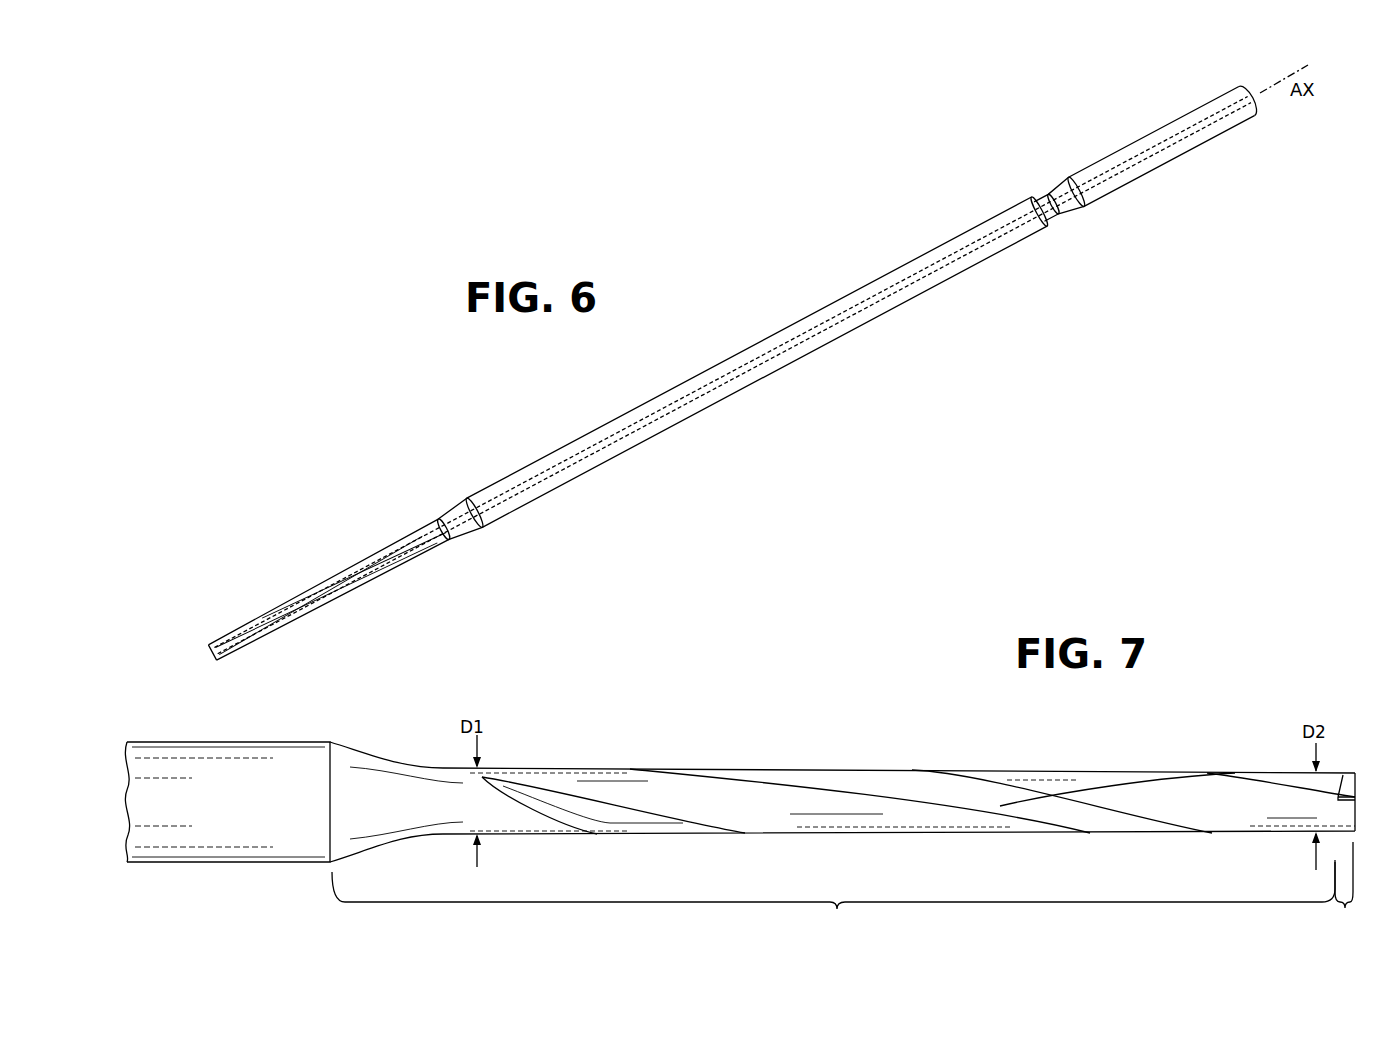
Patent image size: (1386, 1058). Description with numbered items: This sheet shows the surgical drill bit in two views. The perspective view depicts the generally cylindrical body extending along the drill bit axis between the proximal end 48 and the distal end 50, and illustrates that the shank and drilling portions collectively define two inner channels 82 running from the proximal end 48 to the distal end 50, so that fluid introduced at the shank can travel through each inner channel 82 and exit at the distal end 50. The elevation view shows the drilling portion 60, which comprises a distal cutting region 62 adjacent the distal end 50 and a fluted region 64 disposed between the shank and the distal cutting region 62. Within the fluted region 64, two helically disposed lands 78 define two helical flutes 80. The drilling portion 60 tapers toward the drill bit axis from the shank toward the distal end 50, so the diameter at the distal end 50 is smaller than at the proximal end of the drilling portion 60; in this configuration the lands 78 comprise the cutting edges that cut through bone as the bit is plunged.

In FIG. 6, the proximal end 48 is at (1256, 84).
In FIG. 6, the distal end 50 is at (206, 655).
In FIG. 7, the distal end 50 is at (1357, 800).
In FIG. 6, the inner channel 82 is at (895, 272).
In FIG. 7, the drilling portion 60 is at (1358, 765).
In FIG. 7, the fluted region 64 is at (833, 899).
In FIG. 7, the distal cutting region 62 is at (1347, 887).
In FIG. 7, the lands 78 is at (963, 770).
In FIG. 7, the flutes 80 is at (907, 796).